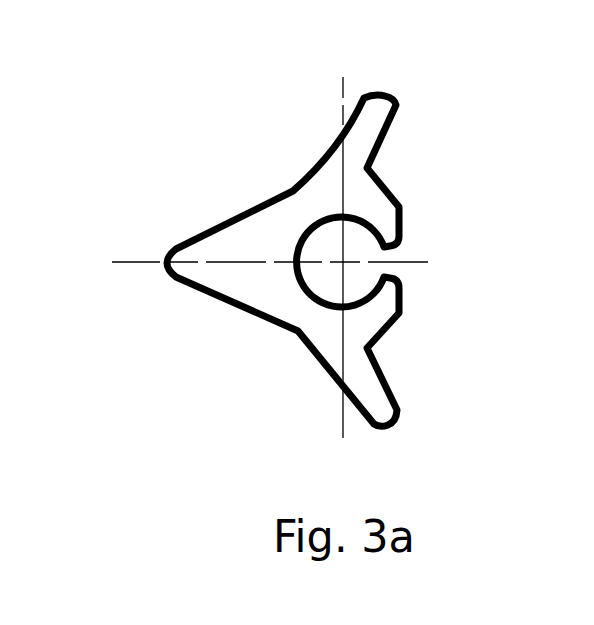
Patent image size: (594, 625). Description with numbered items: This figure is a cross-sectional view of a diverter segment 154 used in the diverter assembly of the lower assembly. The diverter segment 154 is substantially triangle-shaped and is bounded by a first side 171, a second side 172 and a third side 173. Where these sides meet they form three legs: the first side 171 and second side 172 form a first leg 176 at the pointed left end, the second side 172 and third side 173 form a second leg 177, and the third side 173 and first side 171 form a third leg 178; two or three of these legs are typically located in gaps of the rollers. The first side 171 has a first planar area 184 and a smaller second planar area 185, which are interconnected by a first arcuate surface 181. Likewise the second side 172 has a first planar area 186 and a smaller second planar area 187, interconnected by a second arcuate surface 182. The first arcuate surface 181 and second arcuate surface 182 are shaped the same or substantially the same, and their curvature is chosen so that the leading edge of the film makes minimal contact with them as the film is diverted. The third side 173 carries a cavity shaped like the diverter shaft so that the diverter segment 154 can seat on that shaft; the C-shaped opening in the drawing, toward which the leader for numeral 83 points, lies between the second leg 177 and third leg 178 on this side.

The first side 171 is at (203, 231).
The first leg 176 is at (165, 268).
The second side 172 is at (168, 274).
The first planar area 184 is at (240, 217).
The first arcuate surface 181 is at (291, 190).
The second planar area 185 is at (333, 146).
The first planar area 186 is at (245, 308).
The second arcuate surface 182 is at (299, 334).
The second planar area 187 is at (333, 376).
The third leg 178 is at (395, 98).
The diverter segment 154 is at (370, 168).
The channel opening 83 is at (390, 256).
The third side 173 is at (402, 299).
The second leg 177 is at (391, 419).